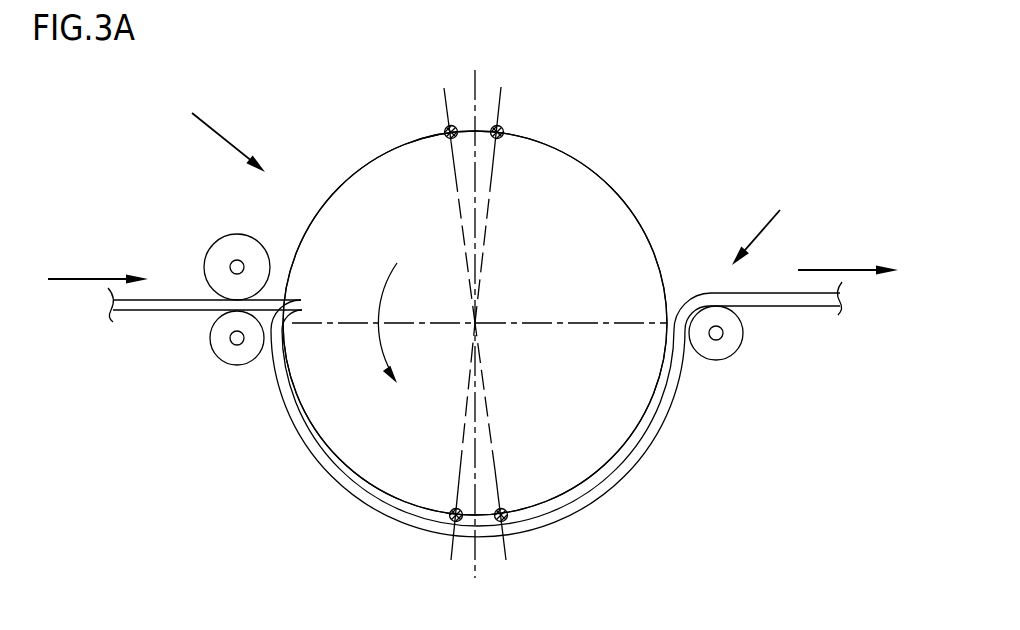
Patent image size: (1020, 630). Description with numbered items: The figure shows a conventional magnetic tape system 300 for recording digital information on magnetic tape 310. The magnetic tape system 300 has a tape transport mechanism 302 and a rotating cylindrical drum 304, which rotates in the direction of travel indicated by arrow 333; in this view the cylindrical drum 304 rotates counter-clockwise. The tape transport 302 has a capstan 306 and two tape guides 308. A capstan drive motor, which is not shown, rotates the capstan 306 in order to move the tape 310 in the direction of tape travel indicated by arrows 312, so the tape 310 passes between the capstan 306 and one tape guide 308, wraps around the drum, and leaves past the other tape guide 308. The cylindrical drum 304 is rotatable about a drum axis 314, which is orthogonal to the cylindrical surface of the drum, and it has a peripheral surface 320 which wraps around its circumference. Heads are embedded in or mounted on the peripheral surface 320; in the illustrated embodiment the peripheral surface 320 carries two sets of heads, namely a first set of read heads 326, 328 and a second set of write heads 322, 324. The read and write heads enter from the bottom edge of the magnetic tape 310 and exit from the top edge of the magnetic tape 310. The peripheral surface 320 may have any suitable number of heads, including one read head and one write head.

The magnetic tape system 300 is at (209, 127).
The tape transport mechanism 302 is at (769, 224).
The rotating cylindrical drum 304 is at (585, 162).
The capstan 306 is at (210, 250).
The tape guides 308 is at (215, 343).
The magnetic tape 310 is at (132, 312).
The arrows indicating direction of tape travel 312 is at (87, 278).
The drum axis 314 is at (475, 323).
The peripheral surface 320 is at (645, 225).
The write head 322 is at (506, 520).
The write head 324 is at (452, 520).
The read head 326 is at (501, 136).
The read head 328 is at (446, 128).
The arrow indicating direction of drum travel 333 is at (392, 299).